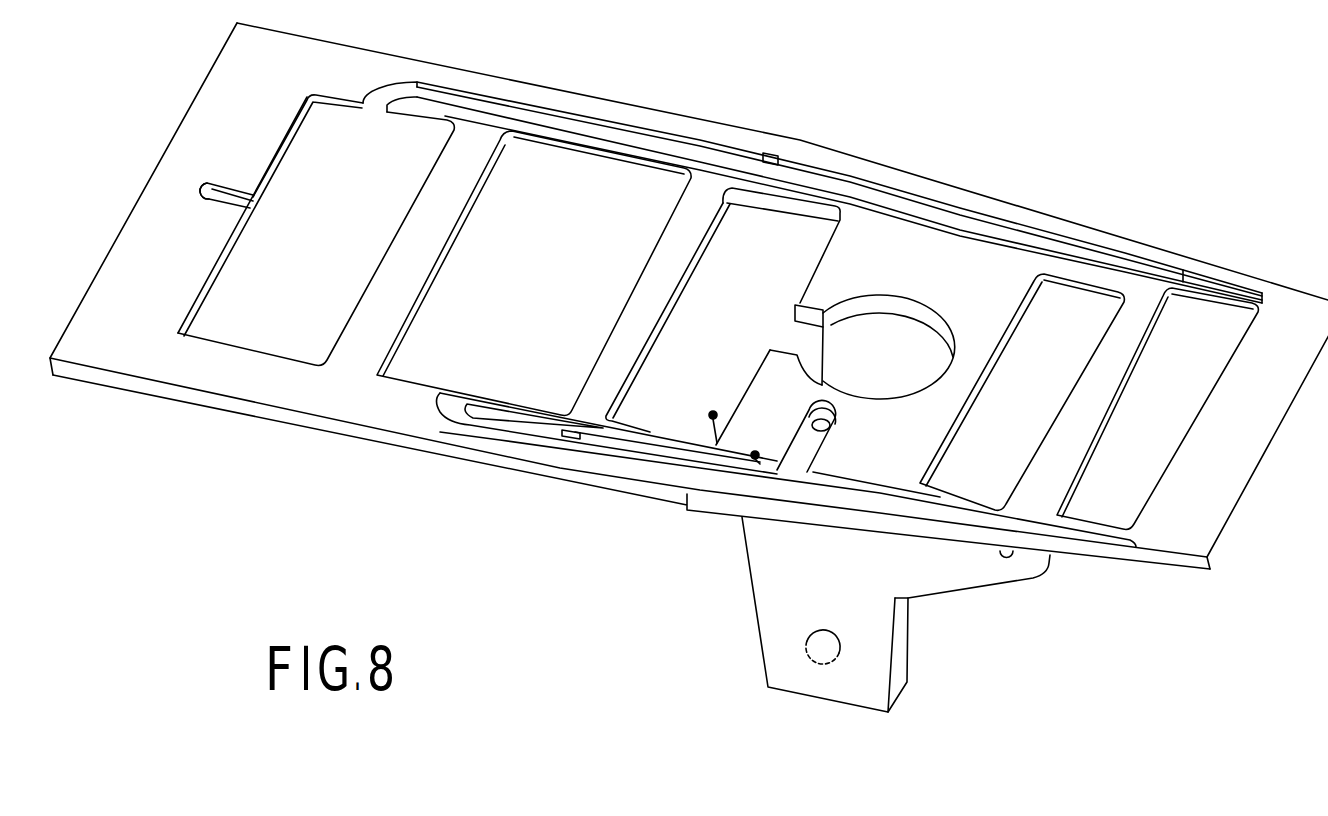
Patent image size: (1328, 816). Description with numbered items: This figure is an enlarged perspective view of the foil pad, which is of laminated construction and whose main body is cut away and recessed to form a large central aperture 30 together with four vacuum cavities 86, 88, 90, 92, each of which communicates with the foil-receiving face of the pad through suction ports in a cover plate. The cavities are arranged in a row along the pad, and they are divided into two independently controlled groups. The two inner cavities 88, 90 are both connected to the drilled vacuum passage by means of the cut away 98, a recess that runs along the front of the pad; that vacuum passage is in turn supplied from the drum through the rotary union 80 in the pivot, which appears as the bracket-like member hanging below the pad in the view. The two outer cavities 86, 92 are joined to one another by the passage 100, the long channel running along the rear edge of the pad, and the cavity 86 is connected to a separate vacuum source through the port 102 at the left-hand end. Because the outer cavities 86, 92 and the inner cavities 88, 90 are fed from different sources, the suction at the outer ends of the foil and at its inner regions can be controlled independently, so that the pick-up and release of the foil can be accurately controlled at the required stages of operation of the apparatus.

The central aperture 30 is at (723, 327).
The rotary union 80 is at (830, 649).
The vacuum cavity 86 is at (398, 133).
The vacuum cavity 88 is at (600, 183).
The vacuum cavity 90 is at (1080, 300).
The vacuum cavity 92 is at (1210, 313).
The cut away 98 is at (787, 470).
The passage 100 is at (823, 183).
The port 102 is at (208, 195).